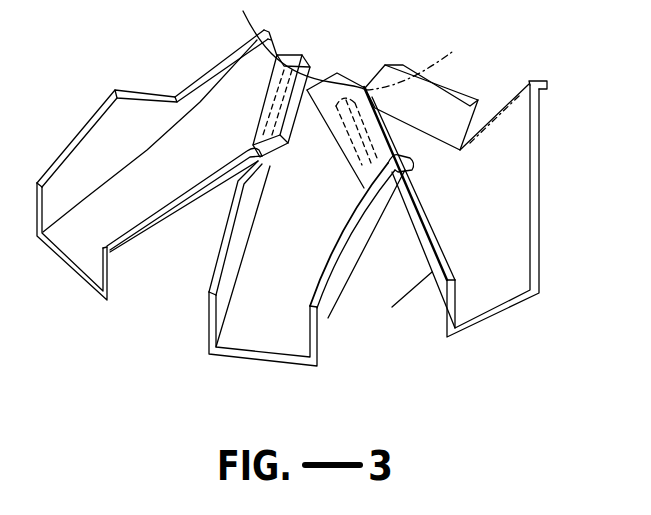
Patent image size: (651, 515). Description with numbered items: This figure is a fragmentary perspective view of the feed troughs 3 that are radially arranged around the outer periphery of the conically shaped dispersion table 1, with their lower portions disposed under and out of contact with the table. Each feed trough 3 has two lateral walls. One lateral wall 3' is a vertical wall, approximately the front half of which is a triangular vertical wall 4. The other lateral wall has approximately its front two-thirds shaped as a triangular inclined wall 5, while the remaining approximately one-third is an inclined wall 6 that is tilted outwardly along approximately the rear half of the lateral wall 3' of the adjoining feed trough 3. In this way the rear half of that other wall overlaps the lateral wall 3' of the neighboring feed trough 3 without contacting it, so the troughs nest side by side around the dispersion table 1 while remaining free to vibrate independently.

The dispersion table 1 is at (452, 52).
The feed trough 3 is at (307, 215).
The lateral wall 3' is at (273, 200).
The triangular vertical wall 4 is at (97, 115).
The triangular inclined wall 5 is at (210, 178).
The inclined wall 6 is at (292, 133).